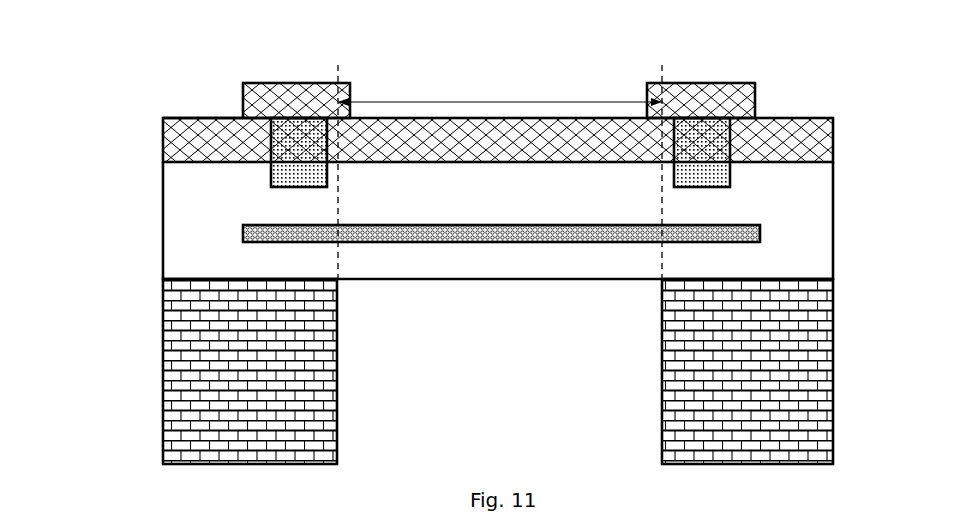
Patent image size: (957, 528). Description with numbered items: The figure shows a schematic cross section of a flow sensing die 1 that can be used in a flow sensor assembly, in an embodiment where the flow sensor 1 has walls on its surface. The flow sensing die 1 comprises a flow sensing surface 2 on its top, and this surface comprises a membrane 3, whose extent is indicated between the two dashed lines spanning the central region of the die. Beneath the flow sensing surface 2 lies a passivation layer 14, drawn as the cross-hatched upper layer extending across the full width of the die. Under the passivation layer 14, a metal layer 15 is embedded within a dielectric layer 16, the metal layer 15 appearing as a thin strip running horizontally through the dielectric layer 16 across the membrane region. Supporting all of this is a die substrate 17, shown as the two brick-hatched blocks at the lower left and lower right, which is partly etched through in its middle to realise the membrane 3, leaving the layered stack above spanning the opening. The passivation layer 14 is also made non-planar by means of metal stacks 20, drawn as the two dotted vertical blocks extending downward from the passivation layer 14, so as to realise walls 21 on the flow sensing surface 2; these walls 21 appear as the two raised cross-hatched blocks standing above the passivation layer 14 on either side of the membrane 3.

The flow sensing die 1 is at (117, 212).
The flow sensing surface 2 is at (207, 115).
The membrane 3 is at (403, 98).
The passivation layer 14 is at (779, 133).
The metal layer 15 is at (745, 230).
The dielectric layer 16 is at (793, 258).
The die substrate 17 is at (197, 383).
The metal stacks 20 is at (700, 133).
The walls 21 is at (241, 99).